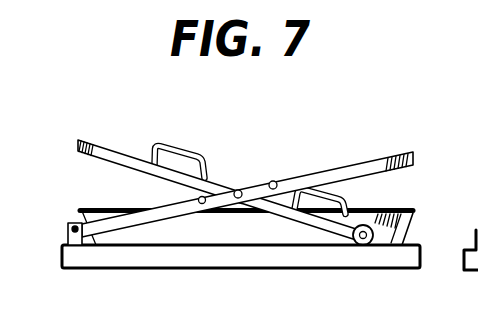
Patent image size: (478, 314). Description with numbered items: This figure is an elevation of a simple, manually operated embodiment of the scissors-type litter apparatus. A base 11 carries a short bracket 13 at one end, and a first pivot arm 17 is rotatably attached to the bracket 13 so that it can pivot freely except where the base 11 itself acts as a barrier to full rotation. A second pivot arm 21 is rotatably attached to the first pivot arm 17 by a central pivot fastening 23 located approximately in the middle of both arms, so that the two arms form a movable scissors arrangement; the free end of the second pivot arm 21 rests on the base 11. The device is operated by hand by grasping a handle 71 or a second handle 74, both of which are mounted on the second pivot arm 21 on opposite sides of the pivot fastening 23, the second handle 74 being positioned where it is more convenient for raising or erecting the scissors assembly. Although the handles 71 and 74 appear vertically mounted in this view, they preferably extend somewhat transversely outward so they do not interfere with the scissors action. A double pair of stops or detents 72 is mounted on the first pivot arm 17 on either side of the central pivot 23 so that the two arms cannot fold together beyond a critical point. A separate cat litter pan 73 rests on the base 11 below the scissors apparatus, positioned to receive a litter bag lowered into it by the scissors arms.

The base 11 is at (298, 258).
The bracket 13 is at (67, 242).
The first pivot arm 17 is at (341, 166).
The second pivot arm 21 is at (102, 145).
The second pivot fastening 23 is at (235, 213).
The handle 71 is at (338, 197).
The stops or detents 72 is at (204, 198).
The cat litter pan 73 is at (200, 236).
The second handle 74 is at (173, 146).